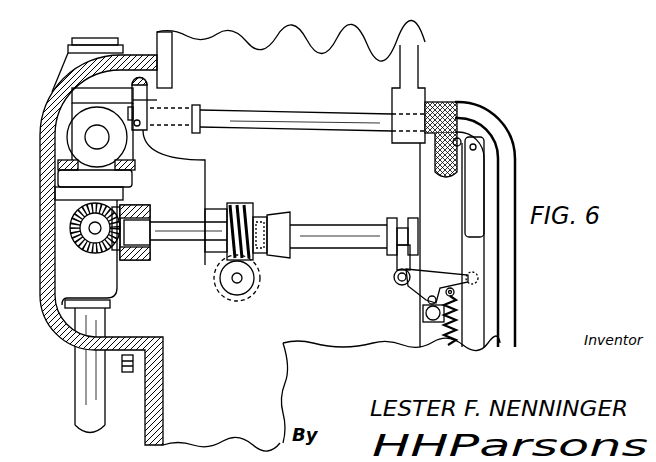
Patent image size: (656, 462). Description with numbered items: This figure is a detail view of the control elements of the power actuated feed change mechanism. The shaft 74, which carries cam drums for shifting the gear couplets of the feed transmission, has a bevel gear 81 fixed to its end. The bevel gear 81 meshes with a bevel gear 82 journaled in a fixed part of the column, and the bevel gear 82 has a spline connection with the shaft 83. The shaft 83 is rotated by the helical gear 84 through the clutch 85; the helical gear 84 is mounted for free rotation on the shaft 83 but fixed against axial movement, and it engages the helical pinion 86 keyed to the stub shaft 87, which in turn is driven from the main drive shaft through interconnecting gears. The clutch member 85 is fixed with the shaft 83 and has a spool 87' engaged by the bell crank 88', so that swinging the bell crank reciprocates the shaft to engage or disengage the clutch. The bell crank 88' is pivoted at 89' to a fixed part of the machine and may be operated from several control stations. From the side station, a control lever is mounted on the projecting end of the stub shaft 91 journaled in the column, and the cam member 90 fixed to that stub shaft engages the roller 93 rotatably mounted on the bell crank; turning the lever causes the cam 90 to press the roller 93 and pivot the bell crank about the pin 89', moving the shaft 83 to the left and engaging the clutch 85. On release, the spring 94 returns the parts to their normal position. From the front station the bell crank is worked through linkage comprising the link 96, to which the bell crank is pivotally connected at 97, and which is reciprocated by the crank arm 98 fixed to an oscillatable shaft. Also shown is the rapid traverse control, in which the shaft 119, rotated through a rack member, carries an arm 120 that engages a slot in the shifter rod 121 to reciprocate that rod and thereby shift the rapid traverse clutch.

The shifter rod 121 is at (135, 72).
The arm 120 is at (147, 100).
The shaft 119 is at (284, 97).
The crank arm 98 is at (475, 133).
The link 96 is at (480, 167).
The shaft 74 is at (90, 235).
The bevel gear 81 is at (115, 242).
The bevel gear 82 is at (118, 257).
The shaft 83 is at (173, 228).
The helical gear 84 is at (243, 207).
The clutch 85 is at (280, 218).
The helical pinion 86 is at (225, 283).
The stub shaft 87 is at (258, 286).
The spool 87' is at (402, 224).
The bell crank 88' is at (380, 263).
The pivot pin 89' is at (385, 291).
The roller 93 is at (434, 297).
The cam member 90 is at (426, 323).
The stub shaft 91 is at (433, 325).
The spring 94 is at (452, 338).
The pivot connection 97 is at (472, 272).